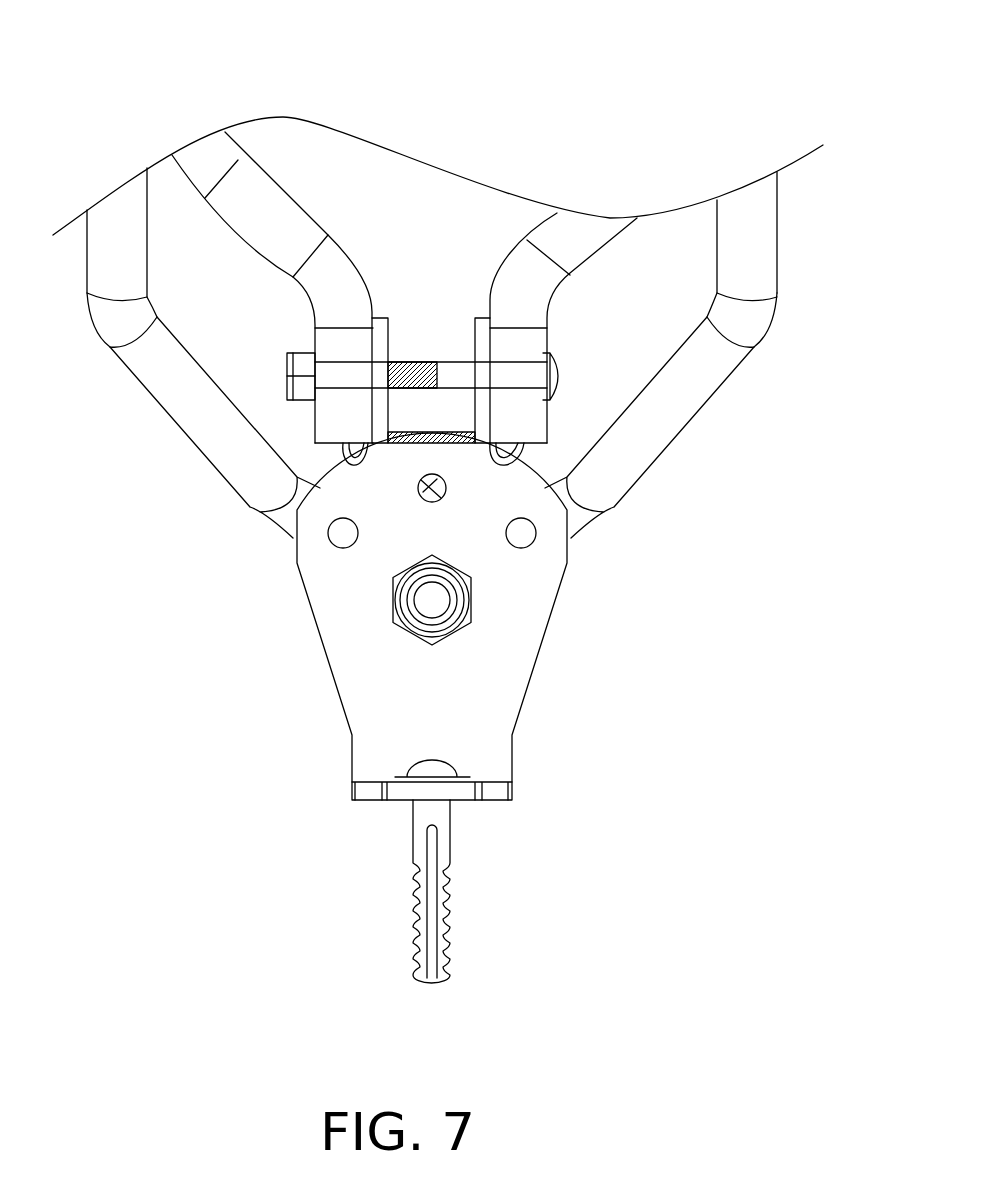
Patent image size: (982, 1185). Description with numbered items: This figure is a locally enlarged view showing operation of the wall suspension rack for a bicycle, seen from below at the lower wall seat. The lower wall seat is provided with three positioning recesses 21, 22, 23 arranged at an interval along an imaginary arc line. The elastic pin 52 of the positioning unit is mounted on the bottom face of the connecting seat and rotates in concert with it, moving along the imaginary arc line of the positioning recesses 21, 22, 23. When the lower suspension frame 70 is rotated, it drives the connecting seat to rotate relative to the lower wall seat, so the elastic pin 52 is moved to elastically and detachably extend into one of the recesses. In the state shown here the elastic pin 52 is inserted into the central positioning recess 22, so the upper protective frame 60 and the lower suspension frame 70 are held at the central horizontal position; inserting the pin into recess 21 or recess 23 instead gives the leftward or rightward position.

The positioning recess 21 is at (340, 535).
The positioning recess 22 is at (445, 487).
The positioning recess 23 is at (524, 535).
The elastic pin 52 is at (432, 474).
The upper protective frame 60 is at (757, 236).
The lower suspension frame 70 is at (265, 217).